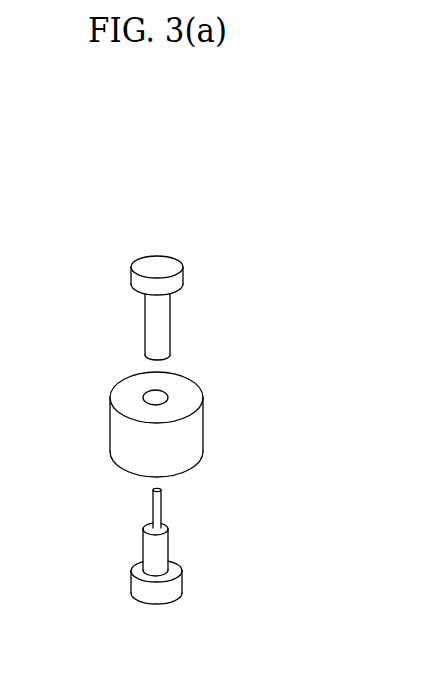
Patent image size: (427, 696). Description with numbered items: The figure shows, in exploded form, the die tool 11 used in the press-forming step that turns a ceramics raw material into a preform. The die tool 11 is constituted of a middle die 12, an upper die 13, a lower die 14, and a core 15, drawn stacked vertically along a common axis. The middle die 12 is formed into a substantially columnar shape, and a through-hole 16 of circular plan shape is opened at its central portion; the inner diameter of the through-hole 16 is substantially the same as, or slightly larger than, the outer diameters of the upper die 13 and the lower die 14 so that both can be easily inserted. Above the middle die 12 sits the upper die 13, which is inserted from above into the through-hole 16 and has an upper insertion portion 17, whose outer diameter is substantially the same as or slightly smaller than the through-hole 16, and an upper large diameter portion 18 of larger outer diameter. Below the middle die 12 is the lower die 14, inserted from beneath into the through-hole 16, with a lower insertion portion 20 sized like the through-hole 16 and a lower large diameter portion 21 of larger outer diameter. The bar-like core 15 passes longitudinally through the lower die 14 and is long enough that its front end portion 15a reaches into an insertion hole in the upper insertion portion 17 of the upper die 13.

The die tool 11 is at (102, 388).
The middle die 12 is at (197, 435).
The upper die 13 is at (153, 262).
The lower die 14 is at (163, 597).
The core 15 is at (163, 512).
The front end portion 15a is at (158, 503).
The through-hole 16 is at (158, 398).
The upper insertion portion 17 is at (158, 323).
The upper large diameter portion 18 is at (180, 278).
The lower insertion portion 20 is at (160, 550).
The lower large diameter portion 21 is at (182, 583).